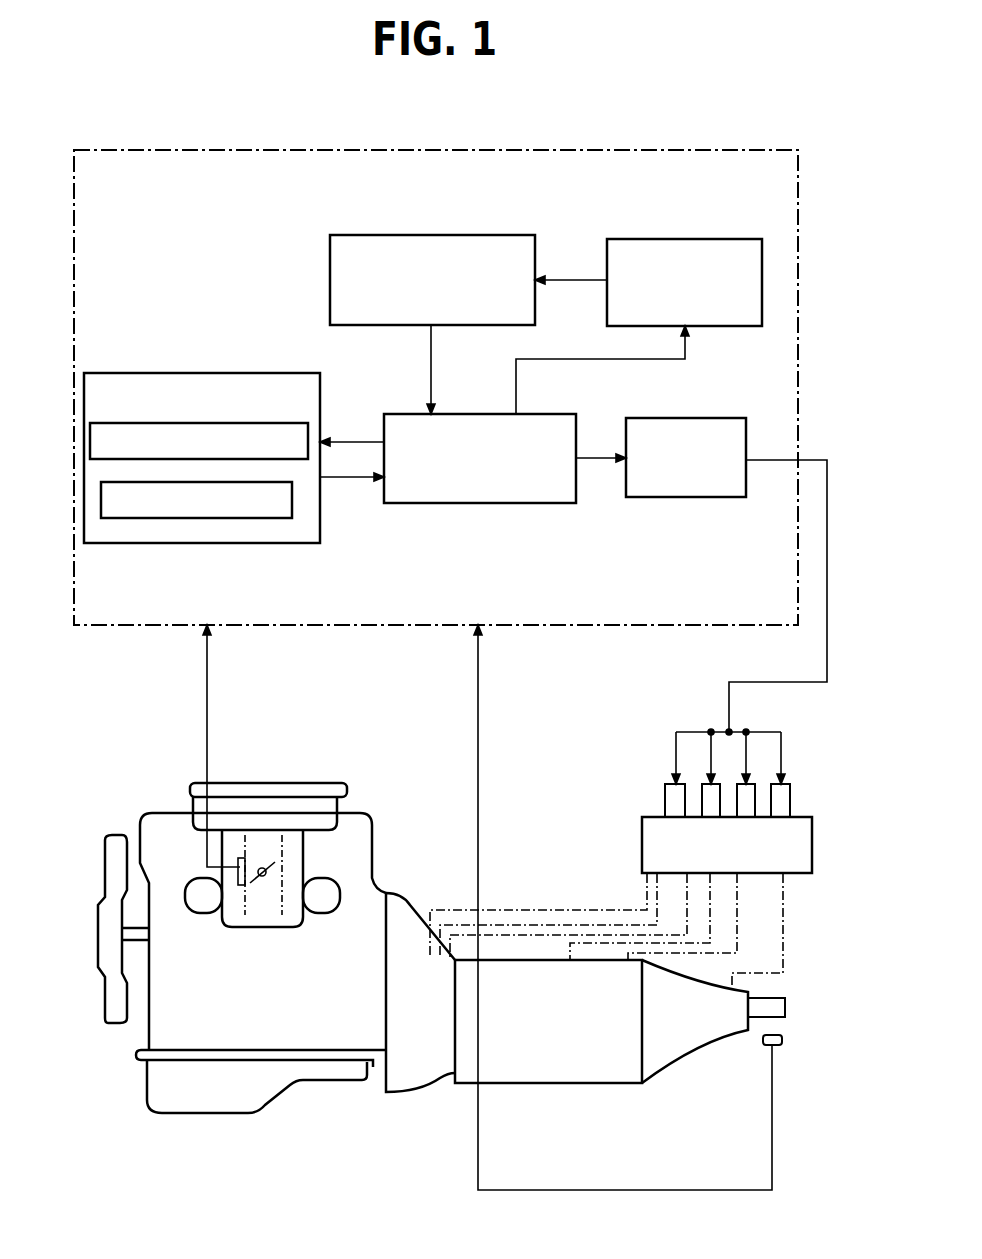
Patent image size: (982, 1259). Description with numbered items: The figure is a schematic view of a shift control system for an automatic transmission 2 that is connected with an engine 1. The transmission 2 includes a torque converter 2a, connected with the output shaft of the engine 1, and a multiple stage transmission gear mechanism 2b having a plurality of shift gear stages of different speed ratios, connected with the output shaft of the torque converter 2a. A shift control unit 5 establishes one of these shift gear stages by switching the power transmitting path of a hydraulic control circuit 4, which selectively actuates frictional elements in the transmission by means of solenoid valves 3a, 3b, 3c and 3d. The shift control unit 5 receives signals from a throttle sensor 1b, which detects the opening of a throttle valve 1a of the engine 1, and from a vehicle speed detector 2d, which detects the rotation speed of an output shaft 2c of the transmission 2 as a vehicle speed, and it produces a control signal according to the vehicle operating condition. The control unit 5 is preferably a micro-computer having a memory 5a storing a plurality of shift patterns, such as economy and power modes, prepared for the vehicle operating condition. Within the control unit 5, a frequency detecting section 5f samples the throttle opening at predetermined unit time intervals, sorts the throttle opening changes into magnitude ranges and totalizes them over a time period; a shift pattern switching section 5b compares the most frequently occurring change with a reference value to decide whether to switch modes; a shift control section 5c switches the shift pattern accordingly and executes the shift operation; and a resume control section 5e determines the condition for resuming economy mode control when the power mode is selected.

The engine 1 is at (162, 1085).
The throttle valve 1a is at (268, 869).
The throttle sensor 1b is at (238, 885).
The automatic transmission 2 is at (541, 1057).
The torque converter 2a is at (425, 1070).
The multiple stage transmission gear mechanism 2b is at (603, 1052).
The output shaft 2c is at (785, 1005).
The vehicle speed detector 2d is at (782, 1040).
The solenoid valve 3a is at (665, 793).
The solenoid valve 3b is at (700, 793).
The solenoid valve 3c is at (757, 793).
The solenoid valve 3d is at (790, 793).
The hydraulic control circuit 4 is at (812, 853).
The shift control unit 5 is at (132, 580).
The memory 5a is at (198, 543).
The shift pattern switching section 5b is at (497, 503).
The shift control section 5c is at (703, 497).
The resume control section 5e is at (388, 235).
The frequency detecting section 5f is at (652, 239).